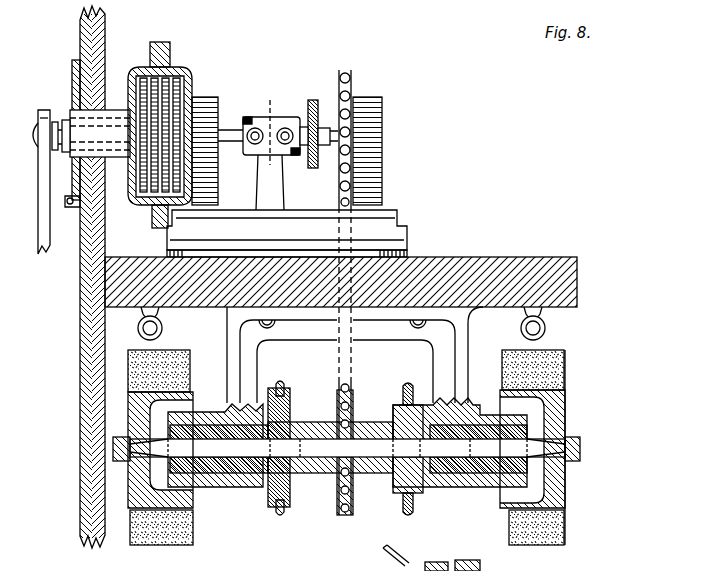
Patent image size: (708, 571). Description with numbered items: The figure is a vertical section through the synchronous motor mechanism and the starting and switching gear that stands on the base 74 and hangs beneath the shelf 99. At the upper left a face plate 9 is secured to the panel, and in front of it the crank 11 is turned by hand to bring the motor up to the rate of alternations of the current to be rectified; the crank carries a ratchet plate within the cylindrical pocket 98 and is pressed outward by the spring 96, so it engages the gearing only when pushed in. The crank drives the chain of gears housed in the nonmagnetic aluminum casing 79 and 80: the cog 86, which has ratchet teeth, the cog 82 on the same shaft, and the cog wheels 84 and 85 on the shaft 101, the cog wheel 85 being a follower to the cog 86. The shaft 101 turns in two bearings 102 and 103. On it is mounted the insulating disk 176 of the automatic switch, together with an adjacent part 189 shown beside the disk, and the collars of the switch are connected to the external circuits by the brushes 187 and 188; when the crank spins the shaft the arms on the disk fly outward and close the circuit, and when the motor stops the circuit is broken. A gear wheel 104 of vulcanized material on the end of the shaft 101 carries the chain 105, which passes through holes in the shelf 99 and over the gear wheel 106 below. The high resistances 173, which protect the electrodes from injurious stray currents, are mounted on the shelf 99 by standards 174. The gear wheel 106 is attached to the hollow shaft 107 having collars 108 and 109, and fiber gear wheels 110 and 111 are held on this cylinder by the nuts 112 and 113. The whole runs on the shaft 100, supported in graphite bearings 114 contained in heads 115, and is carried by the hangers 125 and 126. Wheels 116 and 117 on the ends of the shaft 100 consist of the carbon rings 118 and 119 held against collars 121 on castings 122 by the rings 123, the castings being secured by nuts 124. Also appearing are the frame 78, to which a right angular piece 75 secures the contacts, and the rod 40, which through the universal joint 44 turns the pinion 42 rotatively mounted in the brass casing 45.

The face plate 9 is at (74, 62).
The crank 11 is at (44, 168).
The aluminum casing 80 is at (138, 64).
The cylindrical pocket 98 is at (100, 112).
The spring 96 is at (62, 120).
The aluminum casing 79 is at (188, 70).
The cog 82 is at (166, 78).
The cog wheel 85 is at (140, 116).
The cog 86 is at (151, 213).
The cog wheel 84 is at (206, 97).
The shaft 101 is at (233, 130).
The bearing 102 is at (283, 117).
The brush 187 is at (262, 118).
The brush 188 is at (292, 156).
The insulating disk 176 is at (313, 100).
The hub 189 is at (325, 128).
The gear wheel 104 is at (355, 75).
The bearing 103 is at (370, 125).
The base 74 is at (395, 222).
The shelf 99 is at (560, 290).
The chain 105 is at (380, 283).
The standard 174 is at (140, 313).
The high resistance 173 is at (138, 328).
The hanger 126 is at (222, 318).
The hanger 125 is at (248, 353).
The head 115 is at (216, 412).
The graphite bearing 114 is at (240, 482).
The fiber gear wheel 110 is at (281, 388).
The nut 112 is at (269, 486).
The collar 109 is at (394, 408).
The fiber gear wheel 111 is at (406, 384).
The nut 113 is at (414, 482).
The collar 108 is at (338, 402).
The gear wheel 106 is at (352, 500).
The hollow shaft 107 is at (336, 482).
The shaft 100 is at (540, 452).
The nut 124 is at (114, 452).
The wheel 116 is at (128, 420).
The ring 123 is at (128, 372).
The carbon ring 118 is at (140, 530).
The casting 122 is at (128, 482).
The collar 121 is at (506, 384).
The wheel 117 is at (560, 424).
The carbon ring 119 is at (567, 536).
The frame 78 is at (231, 563).
The right angular piece 75 is at (281, 563).
The rod 40 is at (396, 555).
The universal joint 44 is at (429, 562).
The casing 45 is at (460, 560).
The pinion 42 is at (482, 565).